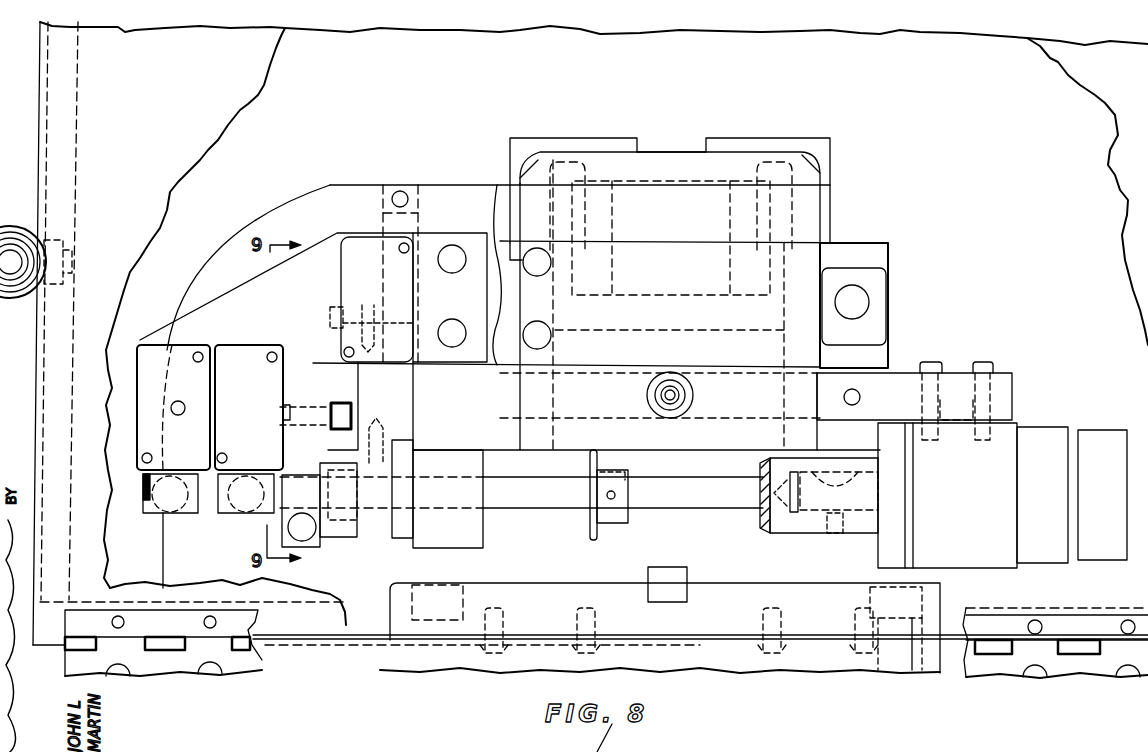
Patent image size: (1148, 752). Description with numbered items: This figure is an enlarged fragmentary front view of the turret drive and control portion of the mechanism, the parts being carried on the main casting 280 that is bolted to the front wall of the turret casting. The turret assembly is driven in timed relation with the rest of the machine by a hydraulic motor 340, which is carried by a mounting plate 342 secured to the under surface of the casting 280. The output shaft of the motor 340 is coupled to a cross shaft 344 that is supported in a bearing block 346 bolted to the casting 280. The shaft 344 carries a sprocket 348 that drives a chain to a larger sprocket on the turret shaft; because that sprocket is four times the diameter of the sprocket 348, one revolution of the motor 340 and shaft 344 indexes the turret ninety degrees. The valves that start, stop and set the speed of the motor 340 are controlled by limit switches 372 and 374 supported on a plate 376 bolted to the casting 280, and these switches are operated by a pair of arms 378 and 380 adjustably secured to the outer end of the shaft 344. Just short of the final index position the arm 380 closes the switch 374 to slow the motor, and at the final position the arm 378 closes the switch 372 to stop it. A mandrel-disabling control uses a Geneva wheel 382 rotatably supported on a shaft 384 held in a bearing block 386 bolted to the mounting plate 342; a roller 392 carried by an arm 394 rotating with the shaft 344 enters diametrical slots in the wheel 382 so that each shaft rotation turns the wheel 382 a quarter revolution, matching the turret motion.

The main casting 280 is at (890, 307).
The hydraulic motor 340 is at (1040, 425).
The mounting plate 342 is at (893, 373).
The cross shaft 344 is at (499, 508).
The bearing block 346 is at (450, 548).
The sprocket 348 is at (592, 538).
The limit switch 372 is at (170, 335).
The limit switch 374 is at (283, 356).
The plate 376 is at (310, 247).
The arm 378 is at (200, 514).
The arm 380 is at (252, 514).
The Geneva wheel 382 is at (385, 465).
The shaft 384 is at (462, 363).
The bearing block 386 is at (487, 299).
The roller 392 is at (338, 431).
The arm 394 is at (340, 440).